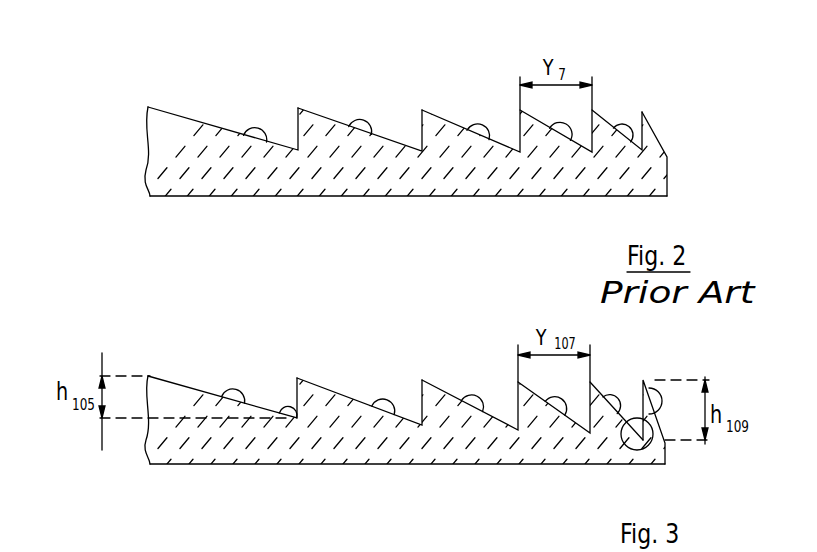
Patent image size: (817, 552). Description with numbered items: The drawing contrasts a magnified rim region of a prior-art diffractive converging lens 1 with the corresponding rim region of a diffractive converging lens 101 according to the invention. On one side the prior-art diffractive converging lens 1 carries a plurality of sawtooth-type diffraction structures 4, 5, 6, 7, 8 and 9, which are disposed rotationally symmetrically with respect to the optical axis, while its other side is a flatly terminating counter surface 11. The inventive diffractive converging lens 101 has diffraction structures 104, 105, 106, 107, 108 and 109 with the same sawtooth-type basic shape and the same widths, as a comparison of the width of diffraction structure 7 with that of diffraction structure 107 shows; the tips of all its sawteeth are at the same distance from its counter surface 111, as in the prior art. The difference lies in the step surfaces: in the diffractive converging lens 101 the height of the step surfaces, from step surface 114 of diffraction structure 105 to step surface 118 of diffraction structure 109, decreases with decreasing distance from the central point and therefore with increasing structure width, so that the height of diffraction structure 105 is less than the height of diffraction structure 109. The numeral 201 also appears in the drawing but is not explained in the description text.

In FIG. 2, the diffractive converging lens 1 is at (443, 72).
In FIG. 2, the diffraction structure 4 is at (262, 143).
In FIG. 2, the diffraction structure 5 is at (360, 143).
In FIG. 2, the diffraction structure 6 is at (482, 146).
In FIG. 2, the diffraction structure 7 is at (563, 144).
In FIG. 2, the diffraction structure 8 is at (625, 144).
In FIG. 2, the diffraction structure 9 is at (647, 126).
In FIG. 2, the counter surface 11 is at (394, 198).
In FIG. 3, the diffractive converging lens 101 is at (405, 338).
In FIG. 3, the diffraction structure 104 is at (226, 409).
In FIG. 3, the diffraction structure 105 is at (392, 416).
In FIG. 3, the diffraction structure 106 is at (470, 413).
In FIG. 3, the diffraction structure 107 is at (550, 416).
In FIG. 3, the diffraction structure 108 is at (590, 433).
In FIG. 3, the diffraction structure 109 is at (649, 388).
In FIG. 3, the counter surface 111 is at (334, 465).
In FIG. 3, the step surface 114 is at (289, 421).
In FIG. 3, the step surface 118 is at (640, 450).
In FIG. 3, the cutting portion 201 is at (474, 541).